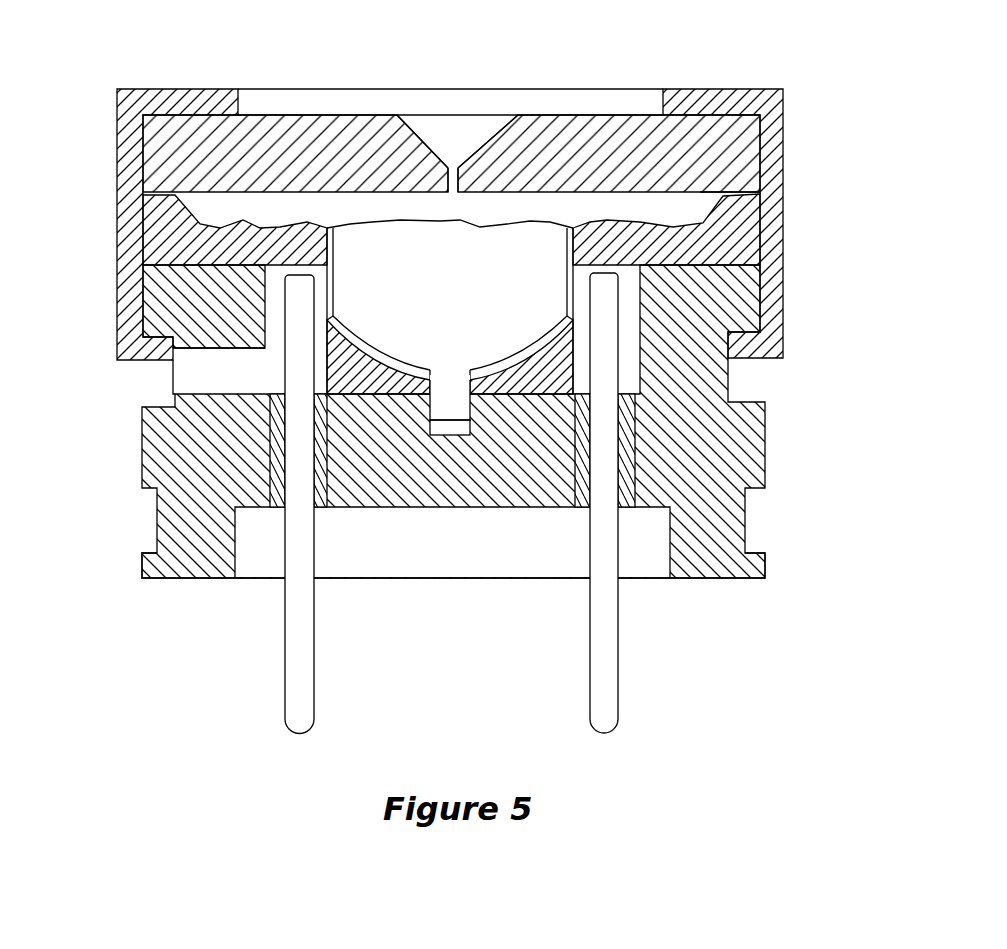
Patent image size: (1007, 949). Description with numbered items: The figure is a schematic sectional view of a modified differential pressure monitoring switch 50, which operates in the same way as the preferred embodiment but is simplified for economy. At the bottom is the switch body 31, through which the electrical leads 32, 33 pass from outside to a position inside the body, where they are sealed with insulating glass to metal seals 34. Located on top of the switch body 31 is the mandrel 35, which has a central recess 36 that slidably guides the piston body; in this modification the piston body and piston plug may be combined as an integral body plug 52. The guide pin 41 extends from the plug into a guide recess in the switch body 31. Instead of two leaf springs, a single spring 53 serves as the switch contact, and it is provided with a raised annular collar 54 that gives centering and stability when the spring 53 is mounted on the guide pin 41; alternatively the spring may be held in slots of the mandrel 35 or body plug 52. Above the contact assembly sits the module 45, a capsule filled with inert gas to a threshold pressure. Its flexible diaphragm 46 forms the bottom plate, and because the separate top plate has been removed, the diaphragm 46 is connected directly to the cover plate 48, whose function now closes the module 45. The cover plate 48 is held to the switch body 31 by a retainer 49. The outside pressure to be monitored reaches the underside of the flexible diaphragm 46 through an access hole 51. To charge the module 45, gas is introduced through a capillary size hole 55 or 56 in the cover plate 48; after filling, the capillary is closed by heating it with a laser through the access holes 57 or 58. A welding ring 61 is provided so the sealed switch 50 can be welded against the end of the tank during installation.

The switch body 31 is at (767, 453).
The electrical lead 32 is at (290, 687).
The electrical lead 33 is at (610, 695).
The insulating glass to metal seal 34 is at (278, 503).
The mandrel 35 is at (562, 368).
The central recess 36 is at (330, 282).
The guide pin 41 is at (448, 406).
The module 45 is at (280, 221).
The flexible diaphragm 46 is at (372, 222).
The cover plate 48 is at (667, 130).
The retainer 49 is at (130, 201).
The differential pressure monitoring switch 50 is at (546, 74).
The access hole 51 is at (222, 350).
The body plug 52 is at (462, 299).
The single spring 53 is at (373, 350).
The raised annular collar 54 is at (435, 372).
The capillary size hole 55 is at (455, 190).
The capillary size hole 56 is at (735, 160).
The access hole 57 is at (420, 116).
The access hole 58 is at (708, 190).
The welding ring 61 is at (767, 560).